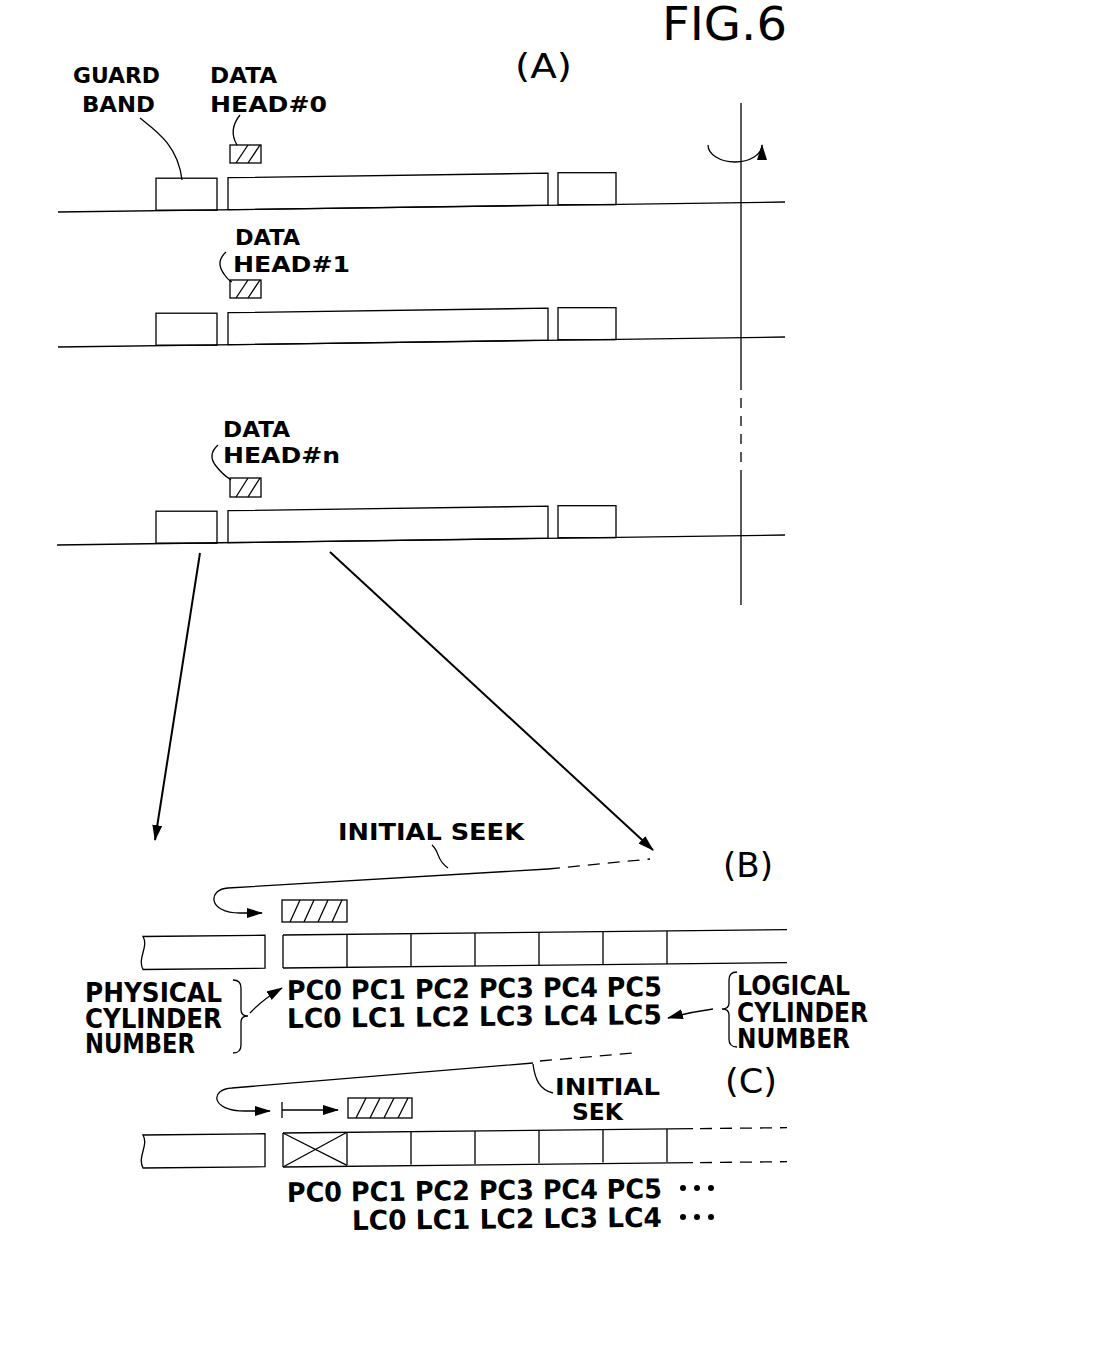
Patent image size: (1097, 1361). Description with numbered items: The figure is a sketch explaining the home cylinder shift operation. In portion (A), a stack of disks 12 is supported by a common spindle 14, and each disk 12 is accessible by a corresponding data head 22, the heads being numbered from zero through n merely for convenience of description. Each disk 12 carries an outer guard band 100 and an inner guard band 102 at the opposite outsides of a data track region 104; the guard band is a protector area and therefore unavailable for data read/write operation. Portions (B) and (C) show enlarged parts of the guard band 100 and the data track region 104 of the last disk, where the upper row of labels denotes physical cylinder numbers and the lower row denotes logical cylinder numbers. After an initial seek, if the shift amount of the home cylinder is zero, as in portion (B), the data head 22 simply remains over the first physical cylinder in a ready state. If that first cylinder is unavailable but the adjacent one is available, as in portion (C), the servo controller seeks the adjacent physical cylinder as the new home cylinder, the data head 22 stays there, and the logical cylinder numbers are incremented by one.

The disk 12 is at (421, 408).
The spindle 14 is at (743, 108).
The data head 22 is at (379, 617).
The outer guard band 100 is at (142, 652).
The inner guard band 102 is at (616, 324).
The data track region 104 is at (388, 327).